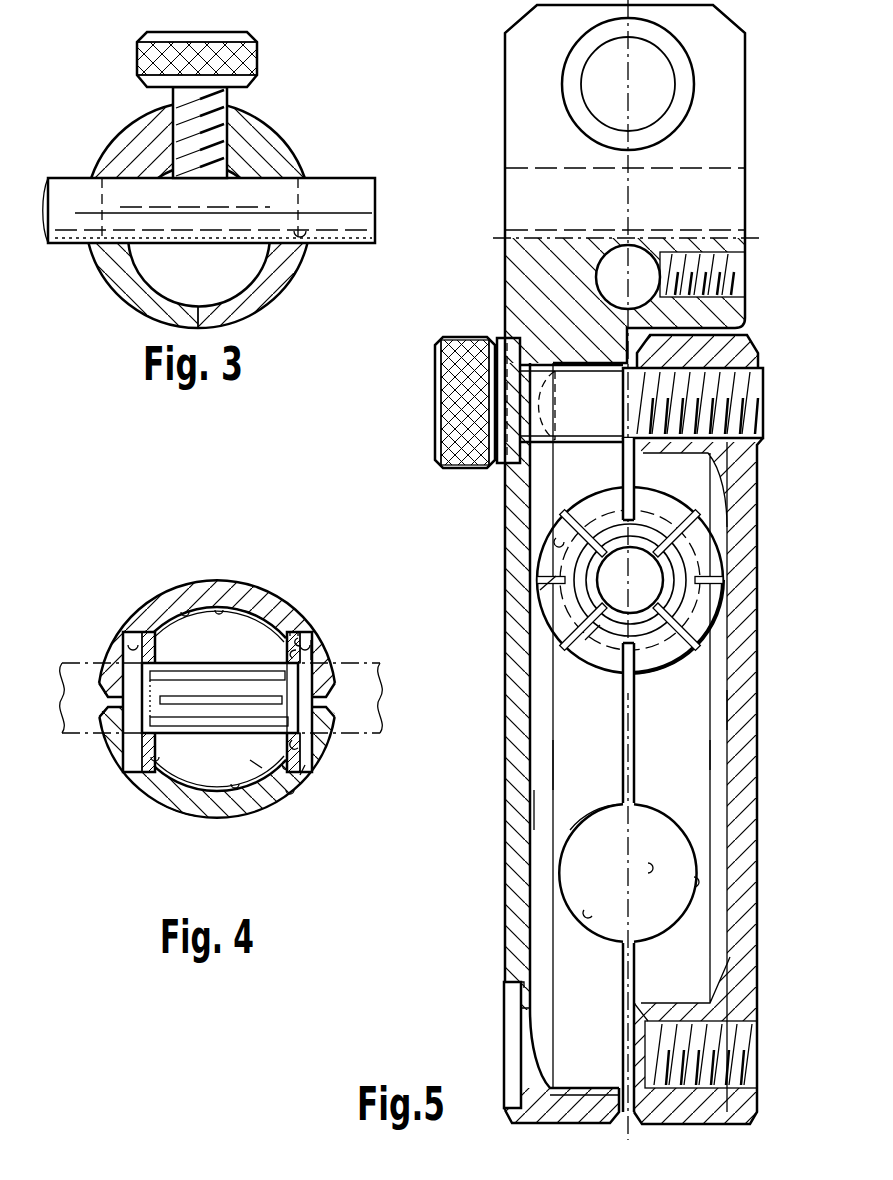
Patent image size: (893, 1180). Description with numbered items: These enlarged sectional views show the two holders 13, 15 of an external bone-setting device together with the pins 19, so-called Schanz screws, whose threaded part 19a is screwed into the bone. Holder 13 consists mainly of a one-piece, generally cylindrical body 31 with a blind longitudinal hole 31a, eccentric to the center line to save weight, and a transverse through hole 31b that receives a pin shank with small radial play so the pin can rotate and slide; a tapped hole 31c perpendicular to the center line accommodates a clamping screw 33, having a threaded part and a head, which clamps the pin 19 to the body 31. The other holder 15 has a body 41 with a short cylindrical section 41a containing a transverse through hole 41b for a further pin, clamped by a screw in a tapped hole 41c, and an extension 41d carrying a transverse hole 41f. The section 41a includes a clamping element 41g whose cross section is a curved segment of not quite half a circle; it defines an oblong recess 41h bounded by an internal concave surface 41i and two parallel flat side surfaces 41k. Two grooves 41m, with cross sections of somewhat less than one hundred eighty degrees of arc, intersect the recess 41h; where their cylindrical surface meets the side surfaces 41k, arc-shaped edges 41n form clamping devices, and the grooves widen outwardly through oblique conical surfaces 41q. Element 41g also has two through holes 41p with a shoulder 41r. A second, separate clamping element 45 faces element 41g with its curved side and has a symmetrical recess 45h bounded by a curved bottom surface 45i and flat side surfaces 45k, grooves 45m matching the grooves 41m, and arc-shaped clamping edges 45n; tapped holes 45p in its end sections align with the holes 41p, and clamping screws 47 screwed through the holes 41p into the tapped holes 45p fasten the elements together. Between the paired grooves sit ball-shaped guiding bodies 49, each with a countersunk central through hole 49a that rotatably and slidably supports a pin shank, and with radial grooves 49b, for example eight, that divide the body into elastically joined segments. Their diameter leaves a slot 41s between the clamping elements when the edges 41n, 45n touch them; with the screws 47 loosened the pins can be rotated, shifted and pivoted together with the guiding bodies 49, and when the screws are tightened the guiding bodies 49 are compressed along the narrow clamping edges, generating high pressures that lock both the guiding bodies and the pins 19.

In FIG. 3, the holder 13 is at (209, 172).
In FIG. 5, the holder 15 is at (613, 562).
In FIG. 3, the pin 19 is at (345, 180).
In FIG. 4, the pin 19 is at (382, 735).
In FIG. 3, the threaded part 19a is at (313, 176).
In FIG. 3, the body 31 is at (127, 302).
In FIG. 3, the blind longitudinal hole 31a is at (227, 300).
In FIG. 3, the transverse through hole 31b is at (320, 234).
In FIG. 3, the tapped hole 31c is at (233, 97).
In FIG. 3, the clamping screw 33 is at (250, 38).
In FIG. 4, the body 41 is at (139, 603).
In FIG. 5, the body 41 is at (506, 317).
In FIG. 5, the short cylindrical section 41a is at (505, 293).
In FIG. 5, the through hole 41b is at (602, 250).
In FIG. 5, the tapped hole 41c is at (700, 293).
In FIG. 5, the extension 41d is at (505, 133).
In FIG. 5, the transverse hole 41f is at (602, 62).
In FIG. 4, the clamping element 41g is at (250, 604).
In FIG. 5, the clamping element 41g is at (605, 580).
In FIG. 4, the oblong recess 41h is at (219, 606).
In FIG. 5, the oblong recess 41h is at (544, 762).
In FIG. 4, the internal concavely curved surface 41i is at (185, 608).
In FIG. 5, the internal concavely curved surface 41i is at (541, 790).
In FIG. 4, the flat side surface 41k is at (313, 648).
In FIG. 5, the flat side surface 41k is at (592, 805).
In FIG. 4, the groove 41m is at (293, 632).
In FIG. 5, the groove 41m is at (590, 653).
In FIG. 4, the edge 41n is at (313, 639).
In FIG. 5, the edge 41n is at (560, 540).
In FIG. 5, the through hole 41p is at (510, 467).
In FIG. 4, the oblique conical surface 41q is at (112, 658).
In FIG. 5, the shoulder 41r is at (516, 998).
In FIG. 4, the slot 41s is at (114, 706).
In FIG. 4, the clamping element 45 is at (214, 810).
In FIG. 5, the clamping element 45 is at (757, 655).
In FIG. 4, the recess 45h is at (166, 793).
In FIG. 5, the recess 45h is at (720, 710).
In FIG. 4, the curved bottom surface 45i is at (235, 796).
In FIG. 5, the curved bottom surface 45i is at (727, 752).
In FIG. 4, the flat side surface 45k is at (313, 769).
In FIG. 5, the flat side surface 45k is at (658, 800).
In FIG. 4, the groove 45m is at (255, 765).
In FIG. 5, the groove 45m is at (693, 553).
In FIG. 4, the clamping device 45n is at (151, 762).
In FIG. 5, the tapped hole 45p is at (757, 363).
In FIG. 5, the clamping screw 47 is at (437, 456).
In FIG. 4, the guiding body 49 is at (310, 643).
In FIG. 5, the guiding body 49 is at (580, 668).
In FIG. 4, the through hole 49a is at (296, 765).
In FIG. 5, the through hole 49a is at (548, 583).
In FIG. 4, the groove 49b is at (310, 753).
In FIG. 5, the groove 49b is at (596, 627).